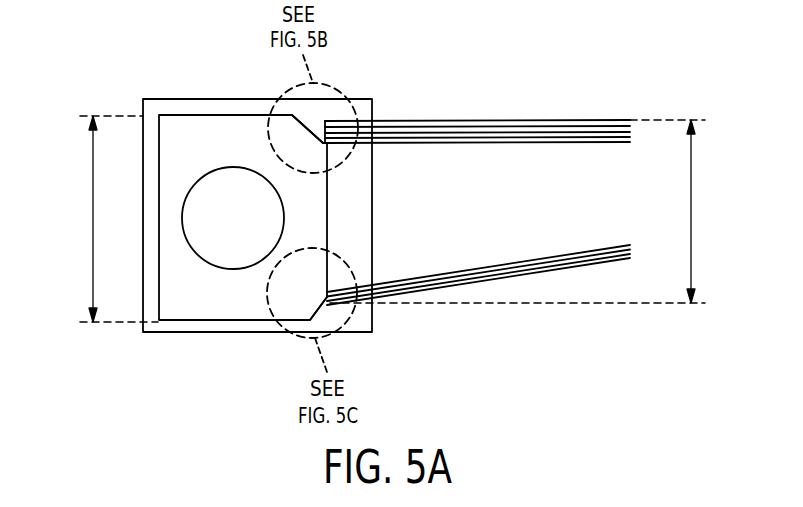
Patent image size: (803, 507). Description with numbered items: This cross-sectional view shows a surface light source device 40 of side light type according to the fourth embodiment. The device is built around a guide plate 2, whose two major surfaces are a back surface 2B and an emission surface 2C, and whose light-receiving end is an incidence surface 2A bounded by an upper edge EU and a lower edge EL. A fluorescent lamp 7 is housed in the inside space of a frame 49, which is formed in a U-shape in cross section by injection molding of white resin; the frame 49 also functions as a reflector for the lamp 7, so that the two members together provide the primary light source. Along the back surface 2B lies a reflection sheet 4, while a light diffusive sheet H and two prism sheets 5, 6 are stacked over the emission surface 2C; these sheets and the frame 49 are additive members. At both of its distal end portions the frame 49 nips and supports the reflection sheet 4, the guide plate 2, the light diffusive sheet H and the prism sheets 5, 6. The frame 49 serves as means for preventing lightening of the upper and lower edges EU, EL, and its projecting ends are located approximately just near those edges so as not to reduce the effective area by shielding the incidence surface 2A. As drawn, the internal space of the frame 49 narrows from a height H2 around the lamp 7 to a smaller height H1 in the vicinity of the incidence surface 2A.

The surface light source device 40 is at (97, 60).
The frame 49 is at (149, 108).
The incidence surface 2A is at (328, 200).
The upper edge EU is at (330, 145).
The lower edge EL is at (328, 297).
The fluorescent lamp 7 is at (232, 258).
The emission surface 2C is at (535, 144).
The prism sheet 6 is at (455, 120).
The prism sheet 5 is at (508, 120).
The light diffusive sheet H is at (580, 142).
The back surface 2B is at (557, 252).
The guide plate 2 is at (612, 242).
The reflection sheet 4 is at (535, 276).
The reduced space height H1 is at (690, 240).
The frame space height H2 is at (92, 236).